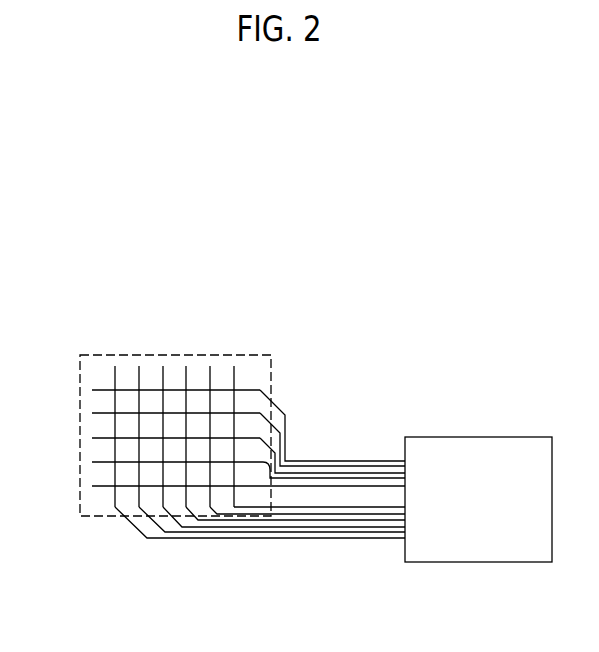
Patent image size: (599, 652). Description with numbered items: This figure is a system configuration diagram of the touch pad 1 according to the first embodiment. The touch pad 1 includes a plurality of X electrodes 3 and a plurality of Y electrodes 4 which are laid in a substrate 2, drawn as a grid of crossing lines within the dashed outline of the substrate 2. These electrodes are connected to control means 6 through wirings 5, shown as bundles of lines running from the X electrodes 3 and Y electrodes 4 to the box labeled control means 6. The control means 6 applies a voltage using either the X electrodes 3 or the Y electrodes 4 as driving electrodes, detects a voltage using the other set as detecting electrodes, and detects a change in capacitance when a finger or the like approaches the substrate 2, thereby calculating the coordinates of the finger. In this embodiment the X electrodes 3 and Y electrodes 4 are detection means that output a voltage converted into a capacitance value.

The touch pad 1 is at (368, 330).
The substrate 2 is at (103, 517).
The X electrodes 3 is at (116, 368).
The Y electrodes 4 is at (98, 389).
The wirings 5 is at (325, 460).
The control means 6 is at (458, 453).